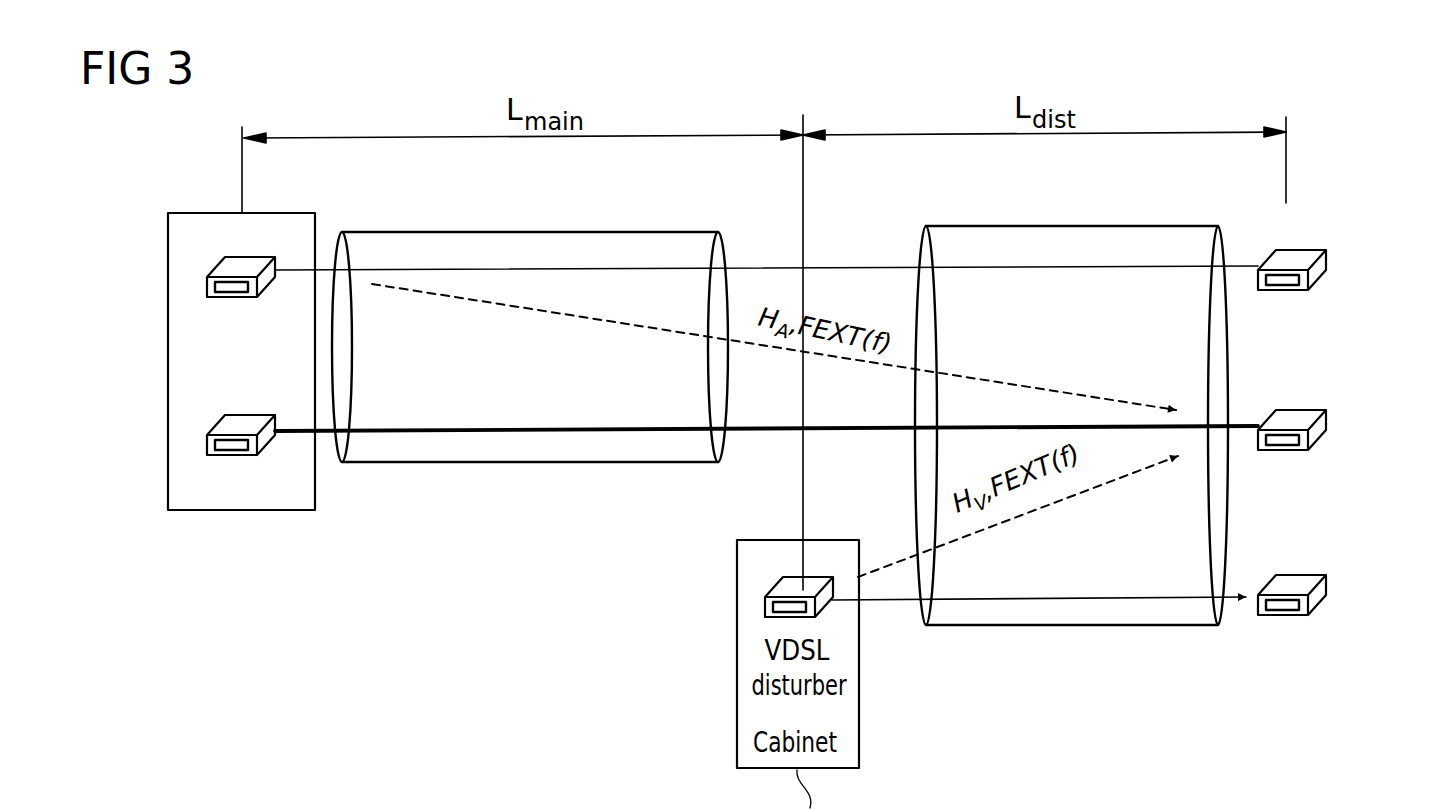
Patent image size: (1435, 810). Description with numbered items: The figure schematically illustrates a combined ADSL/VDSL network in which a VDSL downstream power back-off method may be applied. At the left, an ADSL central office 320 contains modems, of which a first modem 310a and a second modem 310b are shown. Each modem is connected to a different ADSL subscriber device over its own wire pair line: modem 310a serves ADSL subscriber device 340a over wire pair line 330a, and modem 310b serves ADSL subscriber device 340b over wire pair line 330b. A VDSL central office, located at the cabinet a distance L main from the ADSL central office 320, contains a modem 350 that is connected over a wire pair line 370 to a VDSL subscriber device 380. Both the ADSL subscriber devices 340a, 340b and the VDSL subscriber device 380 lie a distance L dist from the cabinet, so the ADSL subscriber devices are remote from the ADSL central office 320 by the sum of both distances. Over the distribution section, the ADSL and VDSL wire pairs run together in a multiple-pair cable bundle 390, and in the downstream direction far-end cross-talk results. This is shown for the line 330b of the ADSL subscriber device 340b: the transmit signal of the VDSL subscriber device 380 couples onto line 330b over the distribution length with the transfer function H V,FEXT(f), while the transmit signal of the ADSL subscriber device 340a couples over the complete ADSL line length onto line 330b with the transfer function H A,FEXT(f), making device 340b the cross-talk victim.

The modem 310a is at (207, 288).
The modem 310b is at (207, 448).
The ADSL central office 320 is at (168, 350).
The wire pair line 330a is at (838, 267).
The wire pair line 330b is at (750, 427).
The ADSL subscriber device 340a is at (1318, 272).
The ADSL subscriber device 340b is at (1318, 432).
The modem 350 is at (765, 610).
The wire pair line 370 is at (1120, 593).
The VDSL subscriber device 380 is at (1318, 597).
The multiple-pair cable bundle 390 is at (1032, 630).